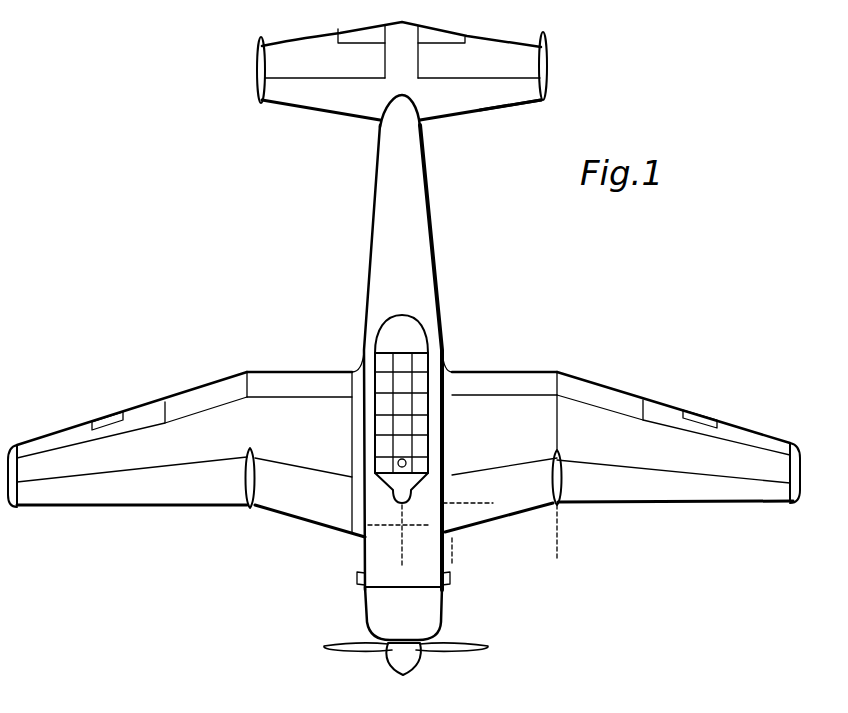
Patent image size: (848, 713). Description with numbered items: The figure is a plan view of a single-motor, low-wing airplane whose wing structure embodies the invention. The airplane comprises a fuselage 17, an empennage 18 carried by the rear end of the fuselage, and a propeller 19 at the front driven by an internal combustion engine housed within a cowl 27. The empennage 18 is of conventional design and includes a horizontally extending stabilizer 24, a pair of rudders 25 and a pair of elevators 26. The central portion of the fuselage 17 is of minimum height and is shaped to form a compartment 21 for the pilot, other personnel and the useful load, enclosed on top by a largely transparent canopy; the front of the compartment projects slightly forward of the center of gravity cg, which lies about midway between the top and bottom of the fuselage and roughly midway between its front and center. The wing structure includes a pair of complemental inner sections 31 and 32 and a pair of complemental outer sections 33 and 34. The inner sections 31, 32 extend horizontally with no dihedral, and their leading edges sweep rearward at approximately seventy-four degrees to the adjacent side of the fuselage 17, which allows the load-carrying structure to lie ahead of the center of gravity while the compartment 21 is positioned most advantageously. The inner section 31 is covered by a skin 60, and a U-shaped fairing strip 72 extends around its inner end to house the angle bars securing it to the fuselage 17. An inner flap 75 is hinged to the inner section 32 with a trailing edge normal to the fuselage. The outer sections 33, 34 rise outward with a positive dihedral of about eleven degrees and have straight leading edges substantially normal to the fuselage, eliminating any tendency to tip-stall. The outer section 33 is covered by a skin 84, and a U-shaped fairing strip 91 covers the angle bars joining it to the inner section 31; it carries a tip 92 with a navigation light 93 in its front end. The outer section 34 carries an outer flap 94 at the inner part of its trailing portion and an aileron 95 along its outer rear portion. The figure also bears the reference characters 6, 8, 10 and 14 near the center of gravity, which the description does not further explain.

The fuselage 17 is at (441, 283).
The empennage 18 is at (514, 108).
The propeller 19 is at (473, 643).
The compartment 21 is at (444, 348).
The stabilizer 24 is at (465, 107).
The rudders 25 is at (548, 76).
The elevators 26 is at (500, 43).
The cowl 27 is at (443, 597).
The inner section 31 is at (520, 402).
The inner section 32 is at (278, 402).
The outer section 33 is at (609, 412).
The outer section 34 is at (200, 420).
The skin 60 is at (487, 462).
The fairing strip 72 is at (447, 487).
The inner flap 75 is at (260, 373).
The skin 84 is at (708, 443).
The fairing strip 91 is at (560, 490).
The tip 92 is at (788, 471).
The navigation light 93 is at (796, 499).
The outer flap 94 is at (225, 383).
The aileron 95 is at (135, 412).
The dimension 6 is at (423, 504).
The dimension 8 is at (453, 430).
The dimension 10 is at (394, 510).
The dimension 14 is at (550, 433).
The center of gravity cg is at (404, 461).